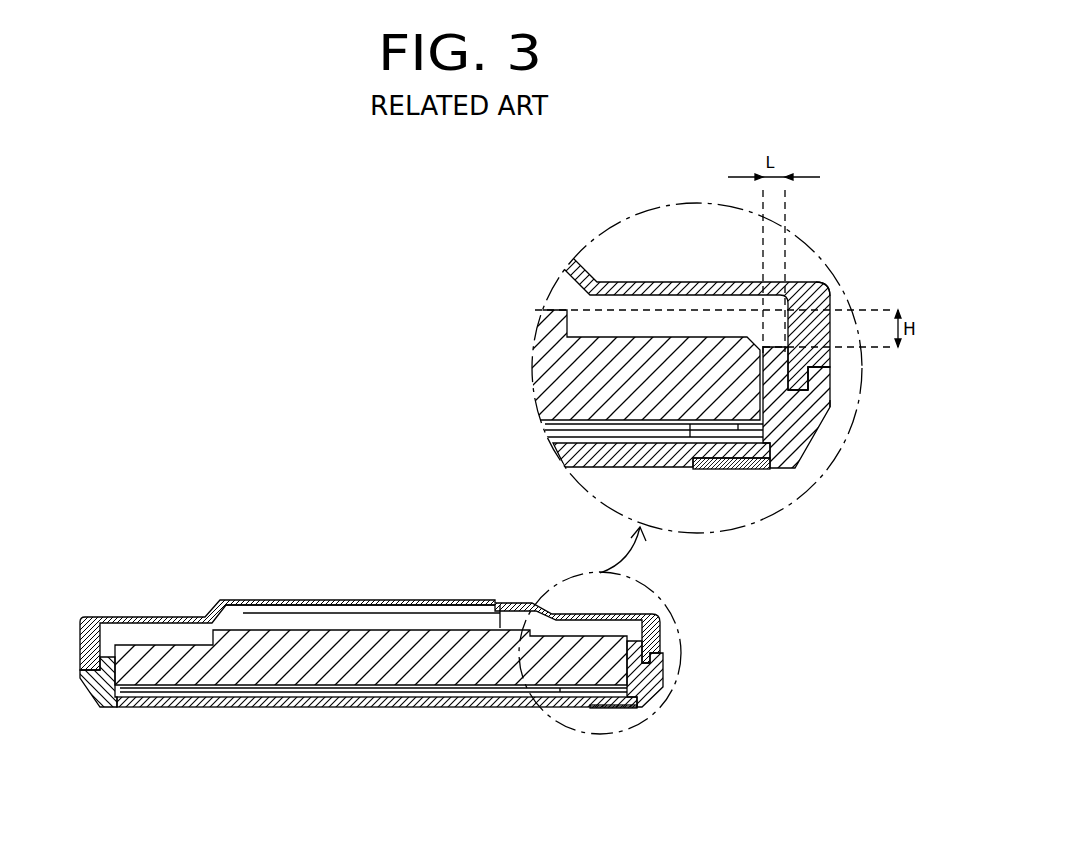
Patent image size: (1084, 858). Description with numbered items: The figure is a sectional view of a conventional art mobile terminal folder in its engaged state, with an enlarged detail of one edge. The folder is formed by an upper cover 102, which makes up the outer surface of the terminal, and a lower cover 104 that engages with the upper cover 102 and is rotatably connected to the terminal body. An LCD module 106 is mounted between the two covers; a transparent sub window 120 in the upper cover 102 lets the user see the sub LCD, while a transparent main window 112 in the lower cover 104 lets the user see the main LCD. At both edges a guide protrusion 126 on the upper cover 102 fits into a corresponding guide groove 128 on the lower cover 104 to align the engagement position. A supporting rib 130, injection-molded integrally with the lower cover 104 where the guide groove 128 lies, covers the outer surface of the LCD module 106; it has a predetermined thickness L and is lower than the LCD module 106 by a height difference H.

The upper cover 102 is at (690, 284).
The lower cover 104 is at (795, 432).
The LCD module 106 is at (618, 348).
The main window 112 is at (580, 458).
The sub window 120 is at (453, 598).
The guide protrusion 126 is at (810, 380).
The guide groove 128 is at (817, 408).
The supporting rib 130 is at (832, 284).